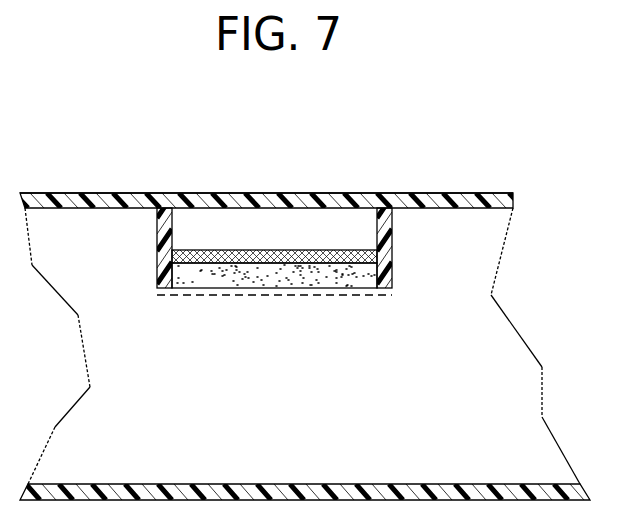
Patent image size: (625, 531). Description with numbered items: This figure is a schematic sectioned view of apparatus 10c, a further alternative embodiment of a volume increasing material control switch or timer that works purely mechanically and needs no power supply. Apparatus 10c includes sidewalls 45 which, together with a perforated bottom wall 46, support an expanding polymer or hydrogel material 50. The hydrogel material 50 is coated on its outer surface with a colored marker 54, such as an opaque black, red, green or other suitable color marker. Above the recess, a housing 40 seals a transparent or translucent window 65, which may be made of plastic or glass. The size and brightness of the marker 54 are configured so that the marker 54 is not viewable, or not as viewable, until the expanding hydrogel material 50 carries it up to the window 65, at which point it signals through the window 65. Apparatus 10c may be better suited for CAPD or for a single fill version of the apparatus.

The apparatus 10c is at (517, 188).
The housing 40 is at (73, 193).
The window 65 is at (267, 193).
The sidewalls 45 is at (157, 236).
The marker 54 is at (215, 255).
The hydrogel material 50 is at (247, 278).
The perforated bottom wall 46 is at (345, 295).